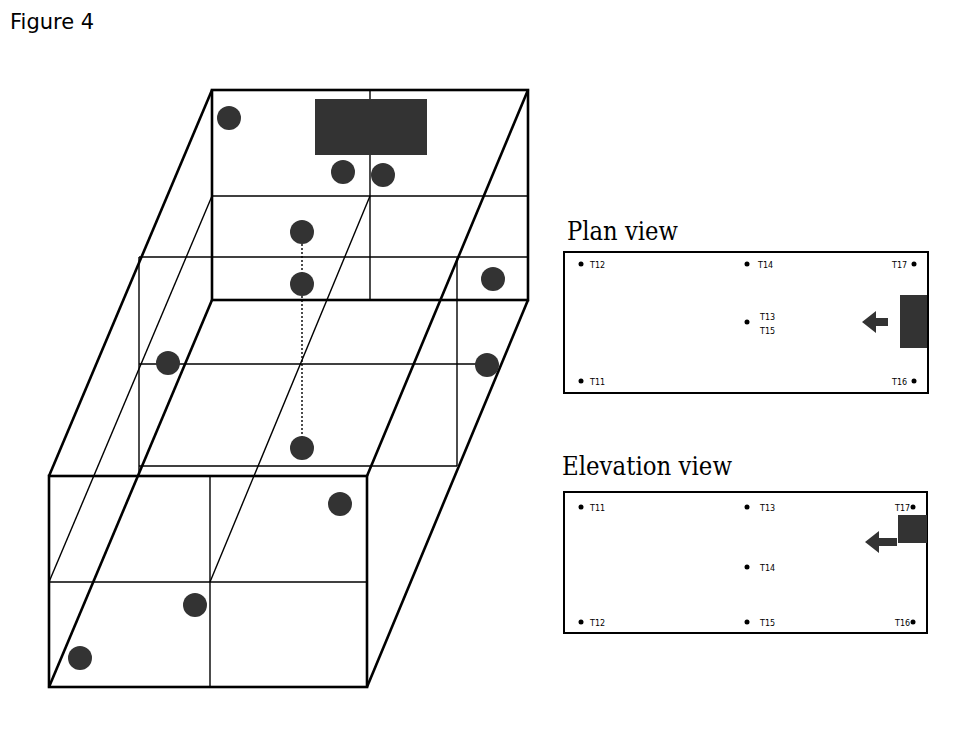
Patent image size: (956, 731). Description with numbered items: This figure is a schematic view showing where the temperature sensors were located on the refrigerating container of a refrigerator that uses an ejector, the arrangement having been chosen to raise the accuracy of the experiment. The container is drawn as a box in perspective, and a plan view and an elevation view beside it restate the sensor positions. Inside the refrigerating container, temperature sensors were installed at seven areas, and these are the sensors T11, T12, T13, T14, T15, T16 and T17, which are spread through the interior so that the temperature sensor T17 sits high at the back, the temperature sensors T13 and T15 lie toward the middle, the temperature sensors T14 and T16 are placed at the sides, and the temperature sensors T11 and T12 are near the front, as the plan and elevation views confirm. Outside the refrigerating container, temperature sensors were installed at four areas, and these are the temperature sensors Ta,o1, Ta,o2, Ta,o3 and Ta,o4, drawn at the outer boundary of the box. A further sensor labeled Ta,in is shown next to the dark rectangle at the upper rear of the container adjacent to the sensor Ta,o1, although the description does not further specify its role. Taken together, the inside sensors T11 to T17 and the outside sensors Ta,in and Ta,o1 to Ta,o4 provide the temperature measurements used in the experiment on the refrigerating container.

The temperature sensor T11 is at (344, 518).
The temperature sensor T12 is at (96, 658).
The temperature sensor T13 is at (319, 284).
The temperature sensor T14 is at (184, 363).
The temperature sensor T15 is at (318, 448).
The temperature sensor T16 is at (509, 279).
The temperature sensor T17 is at (245, 118).
The inlet air temperature sensor Ta,in is at (335, 179).
The temperature sensor Ta,o1 is at (408, 175).
The temperature sensor Ta,o2 is at (514, 365).
The temperature sensor Ta,o3 is at (329, 232).
The temperature sensor Ta,o4 is at (224, 605).